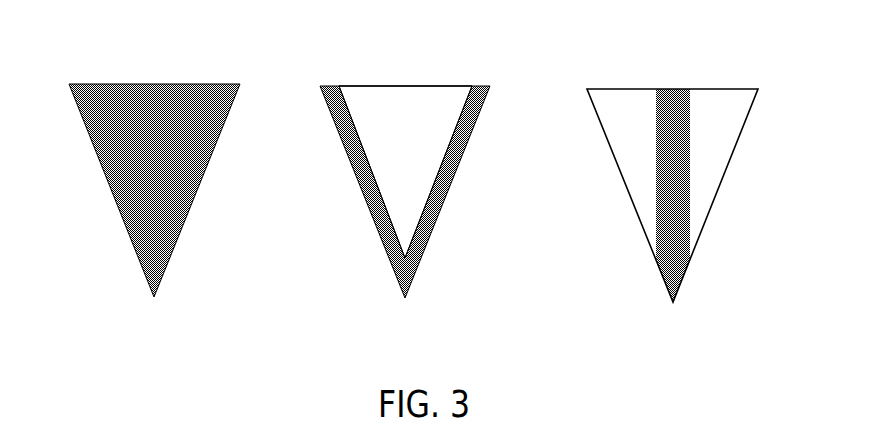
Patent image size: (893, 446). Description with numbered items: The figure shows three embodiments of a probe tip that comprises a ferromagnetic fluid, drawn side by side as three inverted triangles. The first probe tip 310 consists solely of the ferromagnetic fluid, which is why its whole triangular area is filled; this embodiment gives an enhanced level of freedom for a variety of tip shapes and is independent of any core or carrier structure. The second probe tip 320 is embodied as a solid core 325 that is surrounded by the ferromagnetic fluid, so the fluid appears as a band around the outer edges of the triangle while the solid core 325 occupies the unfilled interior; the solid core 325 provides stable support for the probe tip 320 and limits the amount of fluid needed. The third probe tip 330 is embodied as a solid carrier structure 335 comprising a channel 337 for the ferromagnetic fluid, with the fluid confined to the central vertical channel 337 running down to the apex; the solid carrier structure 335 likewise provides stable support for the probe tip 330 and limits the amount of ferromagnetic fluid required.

The first probe tip 310 is at (169, 214).
The probe tip 320 is at (424, 185).
The solid core 325 is at (431, 113).
The probe tip 330 is at (693, 187).
The solid carrier structure 335 is at (710, 152).
The channel 337 is at (671, 88).